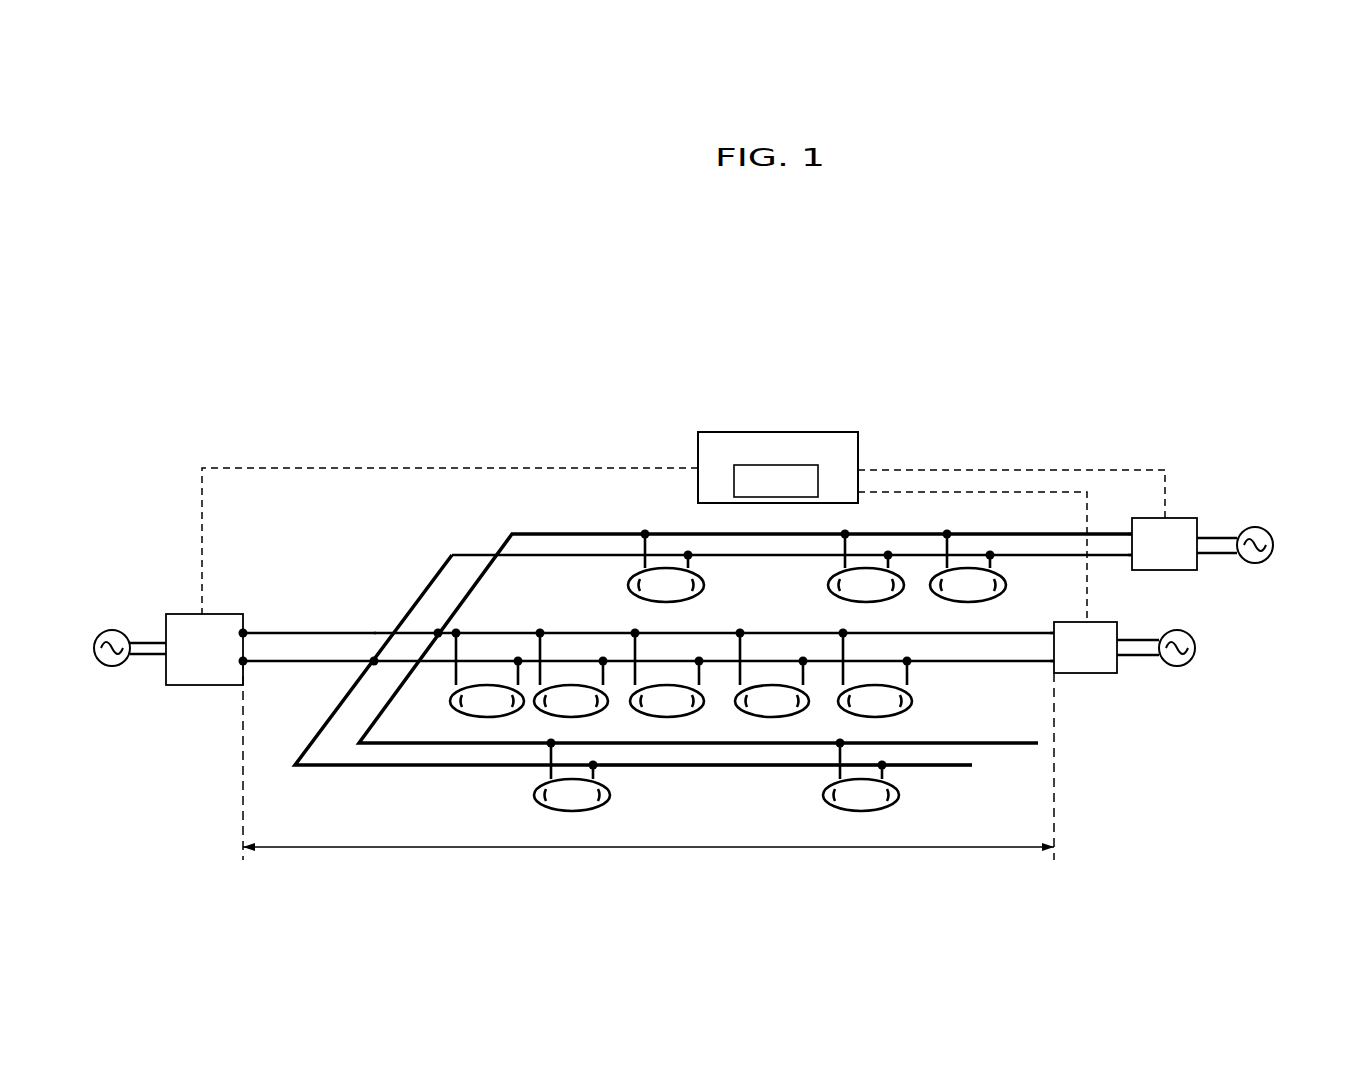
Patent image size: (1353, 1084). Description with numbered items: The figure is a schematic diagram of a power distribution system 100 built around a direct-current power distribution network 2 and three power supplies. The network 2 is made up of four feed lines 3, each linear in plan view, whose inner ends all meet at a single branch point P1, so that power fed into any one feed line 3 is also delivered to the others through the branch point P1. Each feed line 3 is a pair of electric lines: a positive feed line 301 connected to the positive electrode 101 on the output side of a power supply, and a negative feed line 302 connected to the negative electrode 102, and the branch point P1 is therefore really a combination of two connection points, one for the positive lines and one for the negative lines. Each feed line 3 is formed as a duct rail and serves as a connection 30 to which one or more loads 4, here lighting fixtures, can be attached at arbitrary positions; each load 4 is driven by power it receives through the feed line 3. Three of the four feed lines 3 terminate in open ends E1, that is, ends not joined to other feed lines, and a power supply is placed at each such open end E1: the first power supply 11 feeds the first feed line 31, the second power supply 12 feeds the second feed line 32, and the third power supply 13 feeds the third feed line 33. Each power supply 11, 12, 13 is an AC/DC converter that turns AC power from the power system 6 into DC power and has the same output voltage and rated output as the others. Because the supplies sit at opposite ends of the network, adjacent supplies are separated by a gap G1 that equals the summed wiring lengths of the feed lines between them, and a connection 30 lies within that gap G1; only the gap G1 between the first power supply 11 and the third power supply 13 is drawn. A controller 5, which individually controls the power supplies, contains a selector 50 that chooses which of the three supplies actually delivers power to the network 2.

The power distribution system 100 is at (1085, 763).
The power distribution network 2 is at (563, 534).
The feed line 3 is at (488, 745).
The connection 30 is at (283, 636).
The first feed line 31 is at (312, 661).
The second feed line 32 is at (590, 555).
The third feed line 33 is at (553, 661).
The positive feed line 301 is at (479, 580).
The negative feed line 302 is at (330, 663).
The load 4 is at (702, 585).
The controller 5 is at (818, 434).
The selector 50 is at (781, 497).
The power system 6 is at (115, 630).
The first power supply 11 is at (220, 614).
The second power supply 12 is at (1176, 519).
The third power supply 13 is at (1115, 673).
The positive electrode 101 is at (246, 633).
The negative electrode 102 is at (244, 664).
The open end E1 is at (256, 664).
The branch point P1 is at (374, 660).
The gap G1 is at (720, 848).